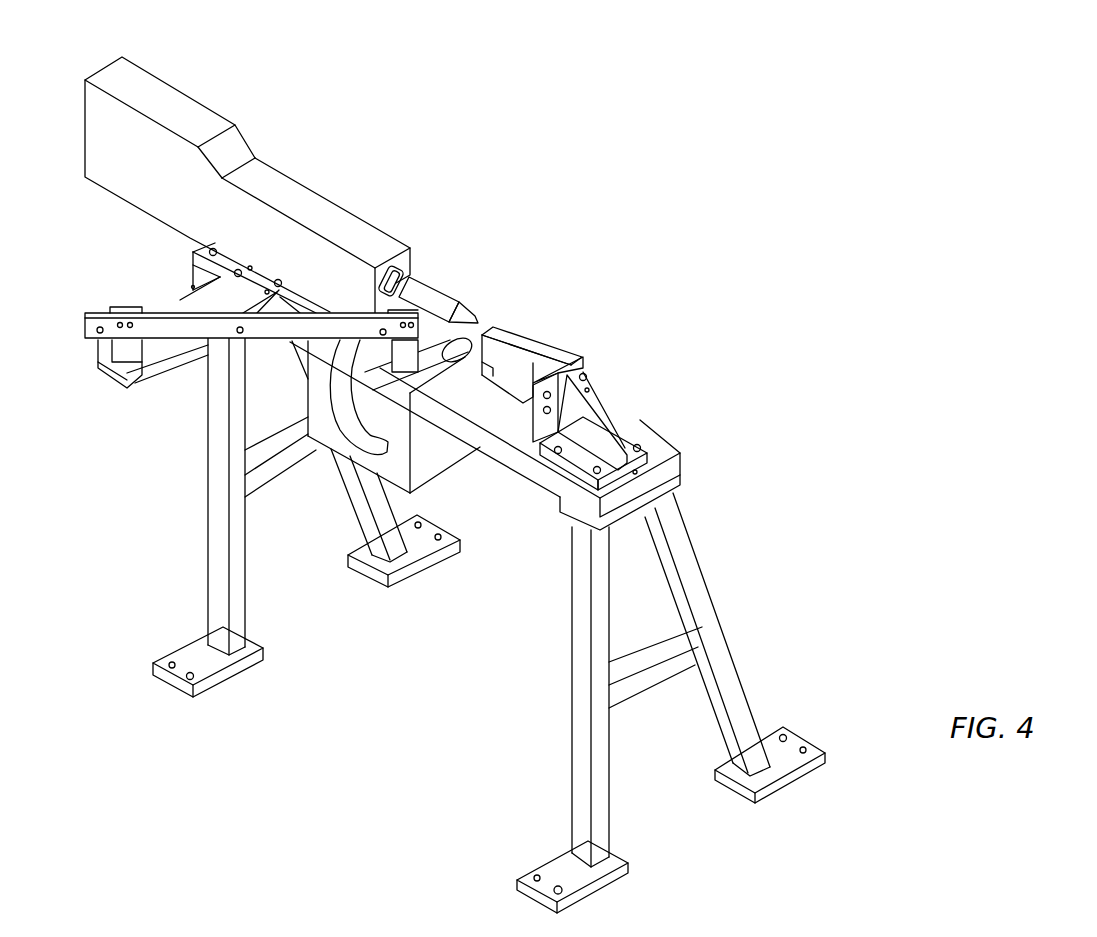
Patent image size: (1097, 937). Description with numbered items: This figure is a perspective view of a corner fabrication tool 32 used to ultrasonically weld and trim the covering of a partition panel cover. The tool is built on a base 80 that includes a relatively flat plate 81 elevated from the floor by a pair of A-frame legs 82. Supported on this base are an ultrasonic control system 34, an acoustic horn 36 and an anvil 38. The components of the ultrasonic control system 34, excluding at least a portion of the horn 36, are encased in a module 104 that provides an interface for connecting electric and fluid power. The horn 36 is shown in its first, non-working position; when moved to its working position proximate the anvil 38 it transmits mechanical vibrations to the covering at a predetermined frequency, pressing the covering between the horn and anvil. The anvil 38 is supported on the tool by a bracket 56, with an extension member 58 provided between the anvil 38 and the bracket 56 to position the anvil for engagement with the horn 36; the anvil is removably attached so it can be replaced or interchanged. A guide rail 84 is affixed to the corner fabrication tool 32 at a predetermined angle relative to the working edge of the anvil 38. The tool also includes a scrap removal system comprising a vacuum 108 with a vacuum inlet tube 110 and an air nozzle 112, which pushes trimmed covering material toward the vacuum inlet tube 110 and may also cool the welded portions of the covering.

The corner fabrication tool 32 is at (614, 157).
The ultrasonic control system 34 is at (288, 168).
The module 104 is at (352, 222).
The acoustic horn 36 is at (450, 287).
The anvil 38 is at (510, 327).
The air nozzle 112 is at (538, 357).
The bracket 56 is at (598, 400).
The extension member 58 is at (552, 373).
The plate 81 is at (677, 463).
The base 80 is at (489, 665).
The A-frame legs 82 is at (237, 584).
The guide rail 84 is at (167, 327).
The vacuum 108 is at (438, 462).
The vacuum inlet tube 110 is at (412, 400).